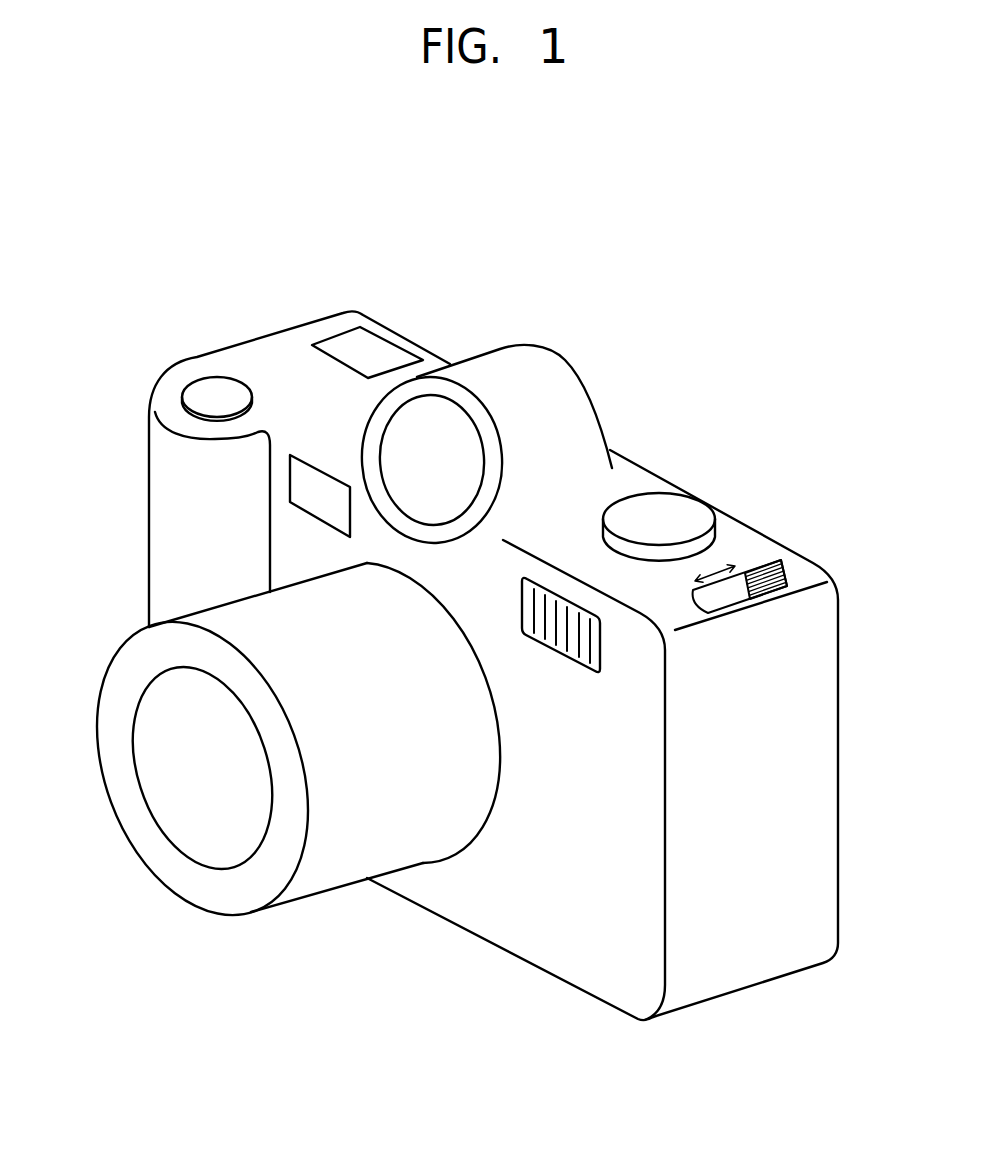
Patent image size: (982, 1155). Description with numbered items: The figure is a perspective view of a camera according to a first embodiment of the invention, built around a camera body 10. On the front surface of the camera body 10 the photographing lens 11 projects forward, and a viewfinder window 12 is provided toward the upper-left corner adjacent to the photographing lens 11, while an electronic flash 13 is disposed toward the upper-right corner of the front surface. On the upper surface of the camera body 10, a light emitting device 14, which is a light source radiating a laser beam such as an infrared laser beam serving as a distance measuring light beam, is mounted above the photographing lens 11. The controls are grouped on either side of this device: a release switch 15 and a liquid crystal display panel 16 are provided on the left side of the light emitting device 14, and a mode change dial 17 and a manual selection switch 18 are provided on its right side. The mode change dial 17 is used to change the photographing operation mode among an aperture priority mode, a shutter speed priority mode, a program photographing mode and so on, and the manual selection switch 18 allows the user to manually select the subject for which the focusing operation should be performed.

The camera body 10 is at (542, 922).
The photographing lens 11 is at (232, 892).
The viewfinder window 12 is at (205, 517).
The electronic flash 13 is at (557, 658).
The light emitting device 14 is at (518, 372).
The release switch 15 is at (215, 392).
The liquid crystal display panel 16 is at (367, 350).
The mode change dial 17 is at (658, 517).
The manual selection switch 18 is at (767, 577).